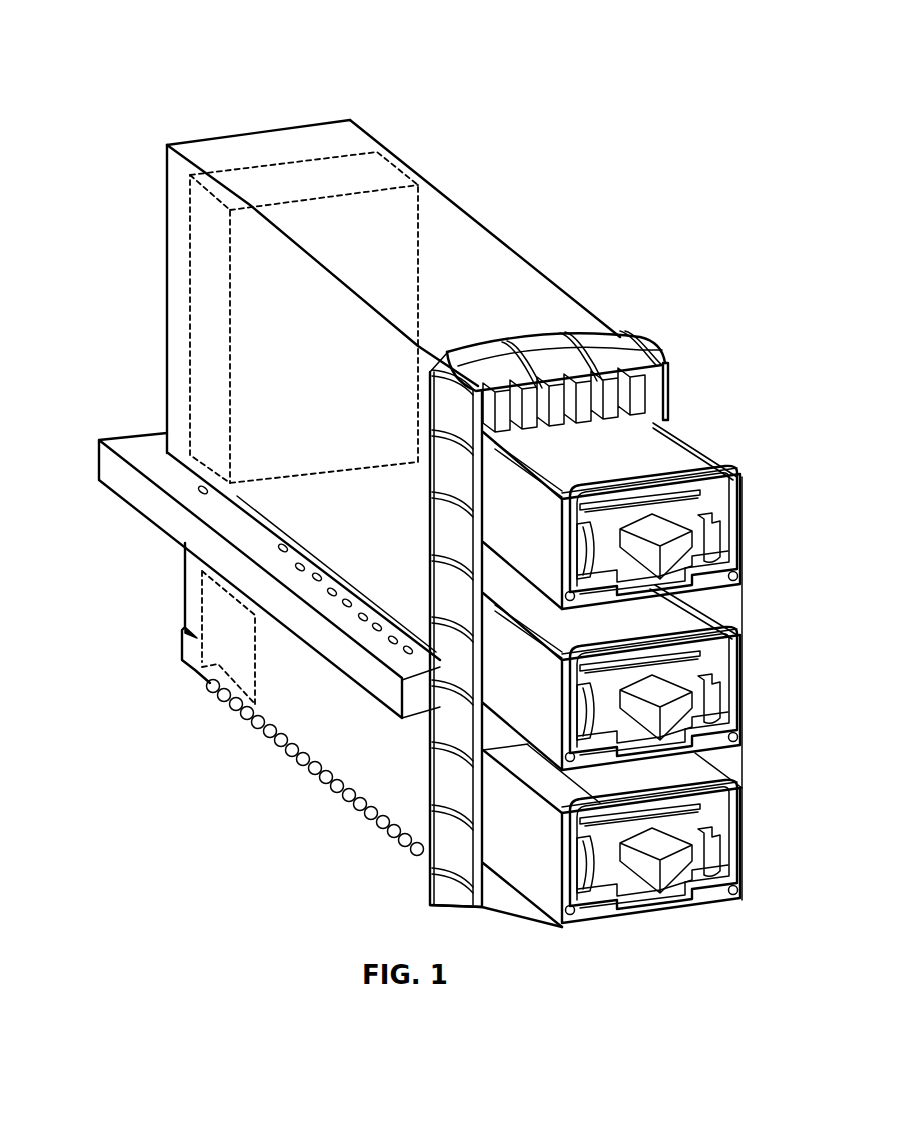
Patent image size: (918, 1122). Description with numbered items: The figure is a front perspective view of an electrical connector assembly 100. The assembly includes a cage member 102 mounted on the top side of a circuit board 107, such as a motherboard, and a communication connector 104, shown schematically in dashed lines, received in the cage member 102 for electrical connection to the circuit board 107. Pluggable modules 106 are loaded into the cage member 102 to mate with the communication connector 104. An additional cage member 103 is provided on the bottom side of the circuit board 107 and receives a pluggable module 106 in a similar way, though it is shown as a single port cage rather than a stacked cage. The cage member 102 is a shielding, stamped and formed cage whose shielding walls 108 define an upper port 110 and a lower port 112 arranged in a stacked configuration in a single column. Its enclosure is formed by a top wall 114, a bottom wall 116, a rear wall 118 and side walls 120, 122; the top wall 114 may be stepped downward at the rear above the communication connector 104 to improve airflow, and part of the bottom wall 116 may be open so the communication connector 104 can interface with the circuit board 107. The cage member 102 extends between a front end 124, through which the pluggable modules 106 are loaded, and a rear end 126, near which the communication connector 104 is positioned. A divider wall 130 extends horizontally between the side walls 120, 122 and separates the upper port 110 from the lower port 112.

The electrical connector assembly 100 is at (183, 65).
The cage member 102 is at (497, 231).
The cage member 103 is at (272, 747).
The communication connector 104 is at (395, 168).
The pluggable modules 106 is at (742, 532).
The circuit board 107 is at (125, 438).
The shielding walls 108 is at (530, 290).
The upper port 110 is at (648, 385).
The lower port 112 is at (450, 720).
The top wall 114 is at (563, 320).
The bottom wall 116 is at (437, 680).
The rear wall 118 is at (260, 131).
The side wall 120 is at (668, 405).
The side wall 122 is at (403, 557).
The front end 124 is at (660, 360).
The rear end 126 is at (333, 123).
The divider wall 130 is at (690, 763).